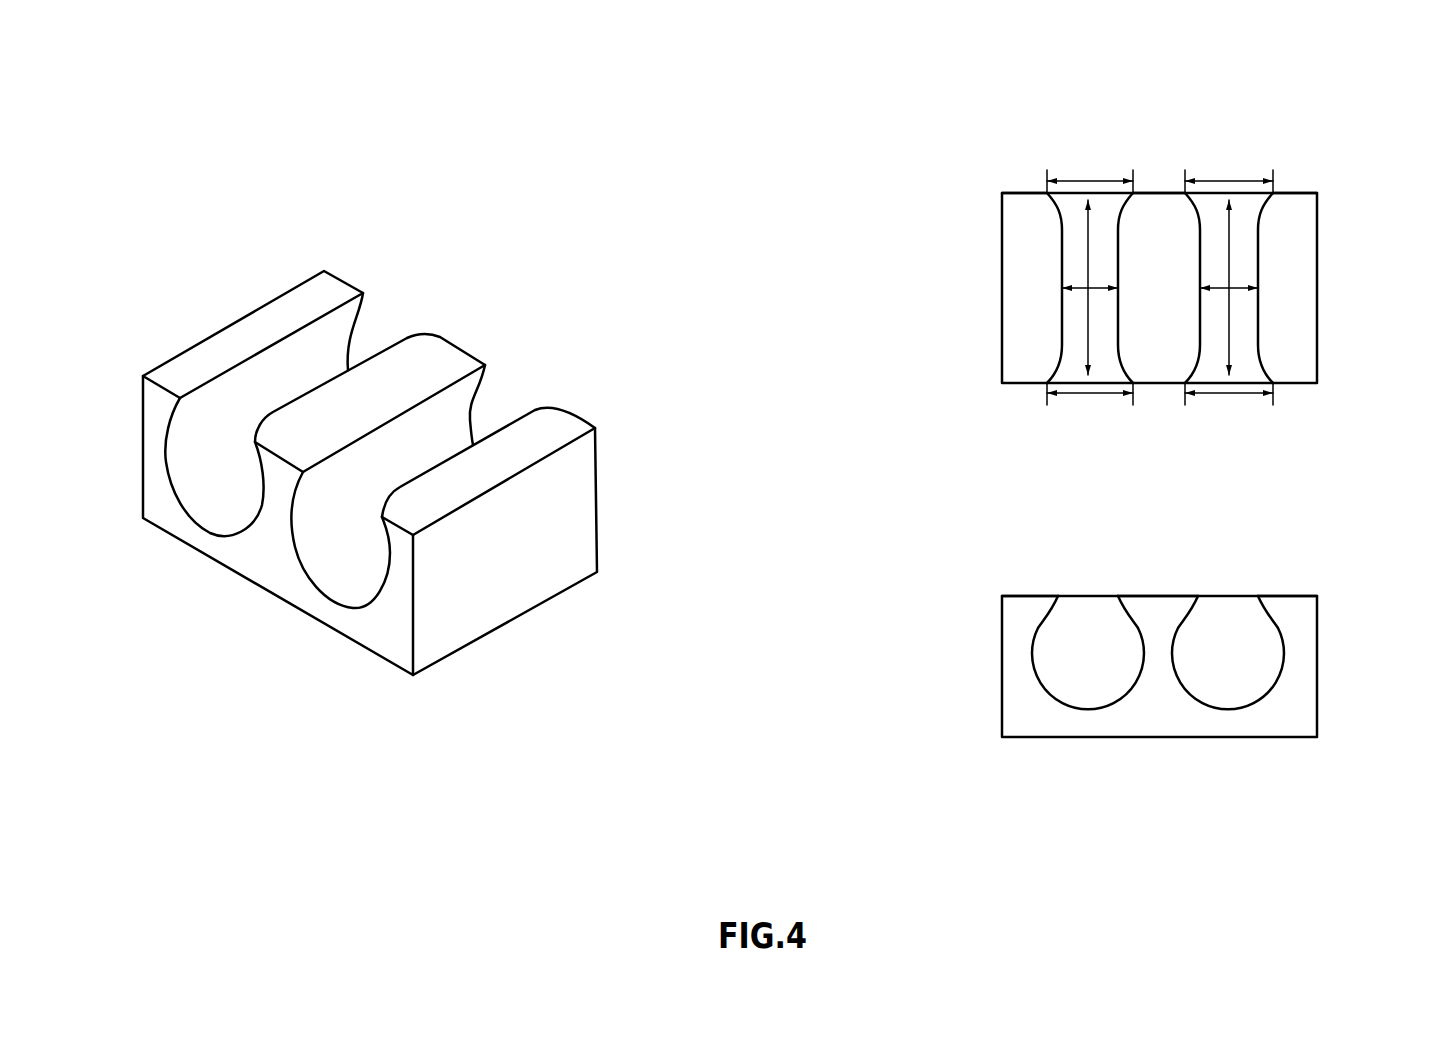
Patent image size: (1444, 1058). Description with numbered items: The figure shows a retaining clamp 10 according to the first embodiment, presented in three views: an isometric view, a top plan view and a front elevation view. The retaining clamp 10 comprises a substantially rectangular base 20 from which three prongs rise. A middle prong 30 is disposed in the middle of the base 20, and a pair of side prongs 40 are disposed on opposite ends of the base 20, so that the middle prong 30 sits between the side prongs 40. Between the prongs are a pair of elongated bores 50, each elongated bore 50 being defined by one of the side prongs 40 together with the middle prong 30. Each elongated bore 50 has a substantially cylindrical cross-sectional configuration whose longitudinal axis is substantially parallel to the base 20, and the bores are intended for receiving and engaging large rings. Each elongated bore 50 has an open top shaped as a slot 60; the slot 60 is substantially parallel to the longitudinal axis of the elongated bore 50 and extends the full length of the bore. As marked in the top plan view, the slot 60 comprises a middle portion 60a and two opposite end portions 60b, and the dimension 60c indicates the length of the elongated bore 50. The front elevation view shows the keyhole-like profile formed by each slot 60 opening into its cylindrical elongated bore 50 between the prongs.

The retaining clamp 10 is at (245, 600).
The base 20 is at (513, 620).
The middle prong 30 is at (450, 362).
The side prongs 40 is at (250, 339).
The elongated bores 50 is at (213, 488).
The slot 60 is at (303, 357).
The middle portion 60a is at (1223, 288).
The end portions 60b is at (1220, 177).
The length of elongated bore 60c is at (1230, 228).